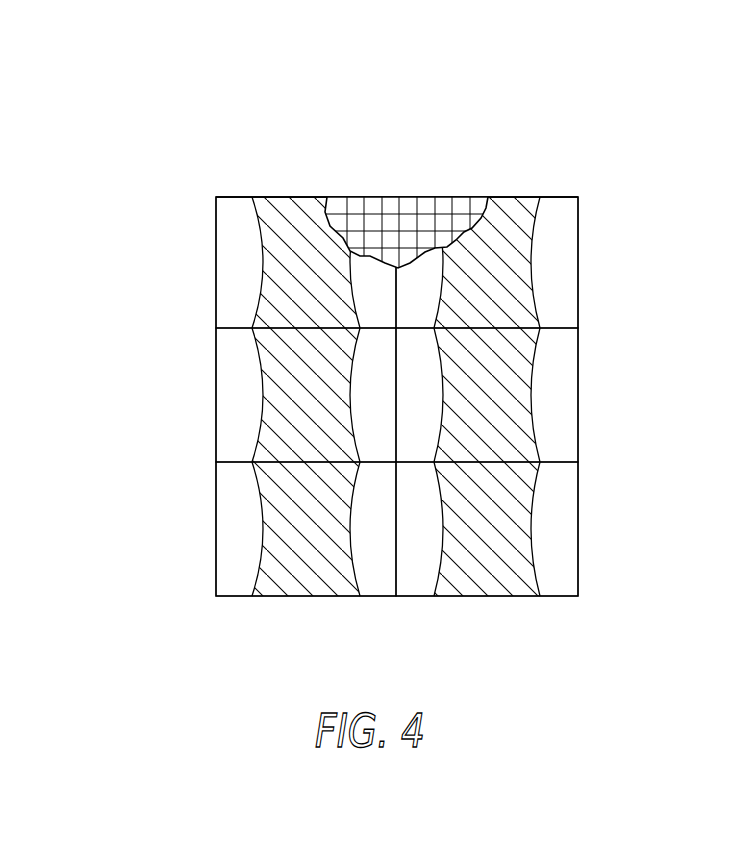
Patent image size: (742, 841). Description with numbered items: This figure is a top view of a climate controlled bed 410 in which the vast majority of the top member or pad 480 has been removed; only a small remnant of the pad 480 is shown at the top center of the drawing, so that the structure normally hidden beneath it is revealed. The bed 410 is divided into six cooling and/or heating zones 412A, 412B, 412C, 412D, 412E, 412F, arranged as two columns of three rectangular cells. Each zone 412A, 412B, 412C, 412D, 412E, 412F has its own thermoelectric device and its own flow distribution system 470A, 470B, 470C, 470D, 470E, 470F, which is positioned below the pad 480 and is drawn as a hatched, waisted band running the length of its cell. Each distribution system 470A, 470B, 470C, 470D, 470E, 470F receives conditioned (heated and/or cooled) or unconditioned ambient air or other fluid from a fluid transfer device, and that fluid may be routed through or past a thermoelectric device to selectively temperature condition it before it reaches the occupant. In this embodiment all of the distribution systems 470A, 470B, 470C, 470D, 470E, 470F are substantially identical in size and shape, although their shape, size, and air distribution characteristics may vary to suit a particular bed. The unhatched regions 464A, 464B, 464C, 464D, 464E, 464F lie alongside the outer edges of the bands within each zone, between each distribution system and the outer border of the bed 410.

The climate controlled bed 410 is at (660, 124).
The cooling and/or heating zone 412A is at (232, 192).
The cooling and/or heating zone 412B is at (553, 205).
The cooling and/or heating zone 412C is at (230, 363).
The cooling and/or heating zone 412D is at (568, 371).
The cooling and/or heating zone 412E is at (238, 540).
The cooling and/or heating zone 412F is at (568, 503).
The outer region of first segment 464A is at (227, 230).
The outer region of second segment 464B is at (560, 251).
The outer region of third segment 464C is at (228, 389).
The outer region of fourth segment 464D is at (557, 405).
The outer region of fifth segment 464E is at (228, 495).
The outer region of sixth segment 464F is at (557, 537).
The flow distribution system 470A is at (270, 255).
The flow distribution system 470B is at (520, 300).
The flow distribution system 470C is at (285, 410).
The flow distribution system 470D is at (520, 445).
The flow distribution system 470E is at (268, 570).
The flow distribution system 470F is at (520, 578).
The top member or pad 480 is at (413, 208).